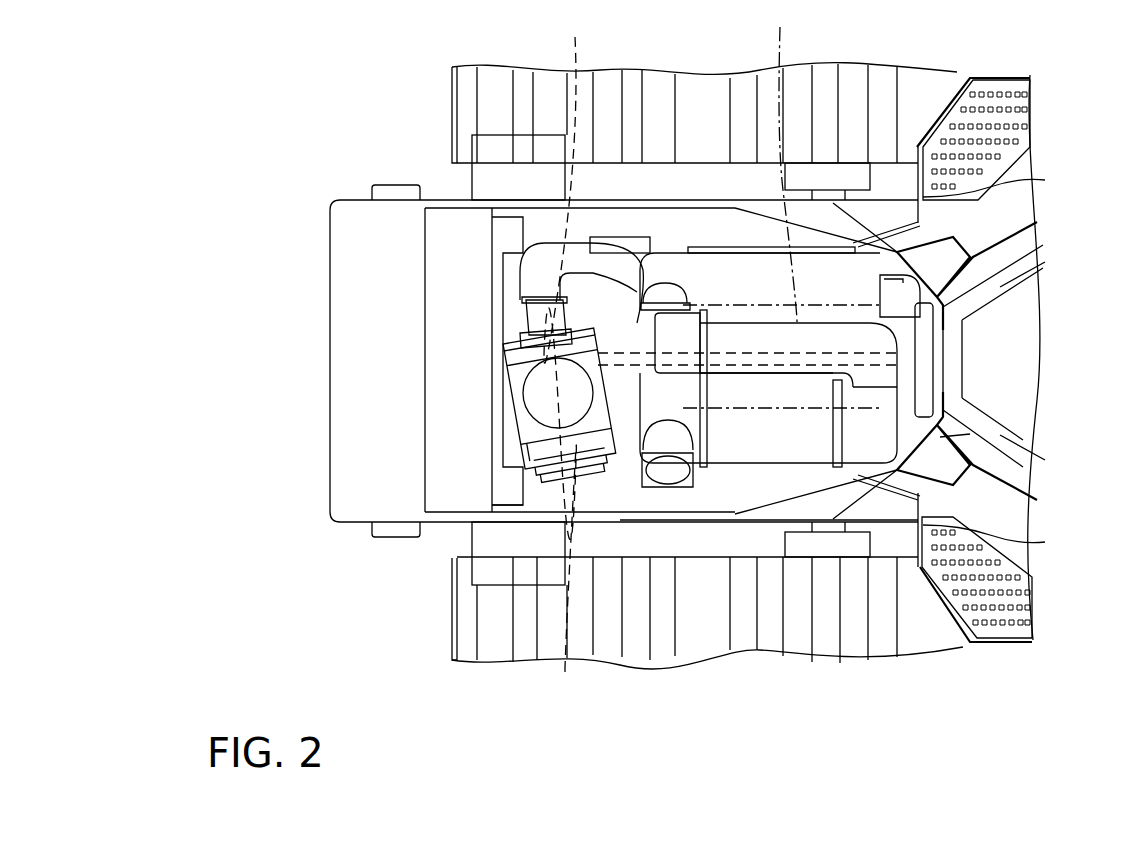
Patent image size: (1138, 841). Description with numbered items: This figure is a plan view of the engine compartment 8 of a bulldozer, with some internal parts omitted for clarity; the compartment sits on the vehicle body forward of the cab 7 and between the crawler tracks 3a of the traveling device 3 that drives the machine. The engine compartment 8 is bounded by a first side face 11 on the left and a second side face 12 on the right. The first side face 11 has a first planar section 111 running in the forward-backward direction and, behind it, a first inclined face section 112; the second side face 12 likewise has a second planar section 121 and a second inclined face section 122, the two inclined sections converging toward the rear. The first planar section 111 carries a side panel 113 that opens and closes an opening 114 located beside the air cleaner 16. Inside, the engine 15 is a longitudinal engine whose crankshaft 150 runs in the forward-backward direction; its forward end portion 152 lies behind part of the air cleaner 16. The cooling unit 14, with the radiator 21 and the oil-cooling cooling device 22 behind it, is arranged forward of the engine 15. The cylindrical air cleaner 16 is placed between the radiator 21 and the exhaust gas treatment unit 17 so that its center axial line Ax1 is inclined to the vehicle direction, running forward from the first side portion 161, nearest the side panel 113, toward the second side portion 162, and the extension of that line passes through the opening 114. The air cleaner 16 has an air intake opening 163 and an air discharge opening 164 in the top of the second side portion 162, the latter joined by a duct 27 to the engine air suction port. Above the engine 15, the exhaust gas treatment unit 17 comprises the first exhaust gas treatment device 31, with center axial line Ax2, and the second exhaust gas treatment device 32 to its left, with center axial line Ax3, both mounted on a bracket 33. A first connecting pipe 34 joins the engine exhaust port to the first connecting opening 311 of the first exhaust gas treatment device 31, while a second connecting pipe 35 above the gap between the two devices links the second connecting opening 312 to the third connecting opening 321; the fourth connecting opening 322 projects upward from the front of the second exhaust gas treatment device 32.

The traveling device 3 is at (437, 127).
The crawler tracks 3a is at (465, 88).
The cab 7 is at (1027, 350).
The engine compartment 8 is at (353, 252).
The first side face 11 is at (692, 530).
The first planar section 111 is at (605, 500).
The first inclined face section 112 is at (897, 493).
The side panel 113 is at (708, 523).
The opening 114 is at (723, 517).
The second side face 12 is at (702, 193).
The second planar section 121 is at (640, 235).
The second inclined face section 122 is at (853, 222).
The cooling unit 14 is at (403, 418).
The engine 15 is at (627, 455).
The crankshaft 150 is at (747, 194).
The forward end portion 152 is at (568, 336).
The air cleaner 16 is at (560, 473).
The first side portion 161 is at (553, 480).
The second side portion 162 is at (517, 343).
The air intake opening 163 is at (527, 407).
The air discharge opening 164 is at (533, 298).
The exhaust gas treatment unit 17 is at (787, 523).
The radiator 21 is at (450, 373).
The cooling device 22 is at (510, 453).
The duct 27 is at (553, 250).
The first exhaust gas treatment device 31 is at (757, 277).
The first connecting opening 311 is at (940, 237).
The second connecting opening 312 is at (661, 292).
The second exhaust gas treatment device 32 is at (817, 497).
The third connecting opening 321 is at (940, 437).
The fourth connecting opening 322 is at (653, 487).
The bracket 33 is at (823, 250).
The first connecting pipe 34 is at (940, 295).
The second connecting pipe 35 is at (853, 320).
The center axial line Ax1 is at (568, 681).
The center axial line Ax2 is at (890, 293).
The center axial line Ax3 is at (880, 455).